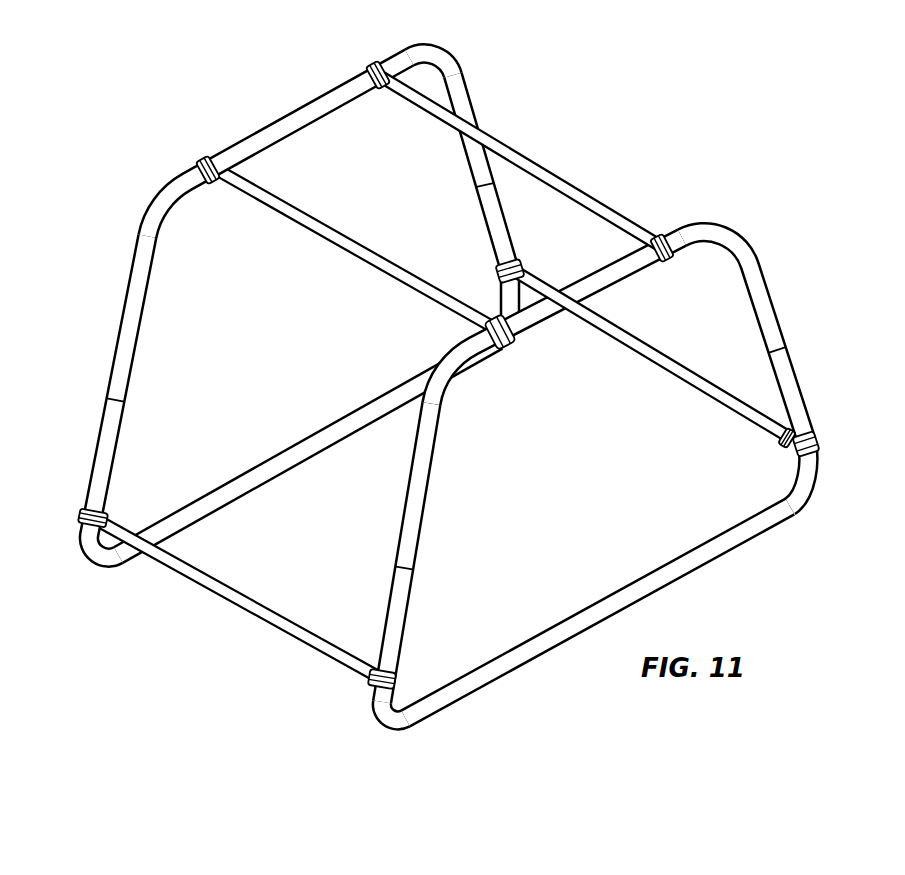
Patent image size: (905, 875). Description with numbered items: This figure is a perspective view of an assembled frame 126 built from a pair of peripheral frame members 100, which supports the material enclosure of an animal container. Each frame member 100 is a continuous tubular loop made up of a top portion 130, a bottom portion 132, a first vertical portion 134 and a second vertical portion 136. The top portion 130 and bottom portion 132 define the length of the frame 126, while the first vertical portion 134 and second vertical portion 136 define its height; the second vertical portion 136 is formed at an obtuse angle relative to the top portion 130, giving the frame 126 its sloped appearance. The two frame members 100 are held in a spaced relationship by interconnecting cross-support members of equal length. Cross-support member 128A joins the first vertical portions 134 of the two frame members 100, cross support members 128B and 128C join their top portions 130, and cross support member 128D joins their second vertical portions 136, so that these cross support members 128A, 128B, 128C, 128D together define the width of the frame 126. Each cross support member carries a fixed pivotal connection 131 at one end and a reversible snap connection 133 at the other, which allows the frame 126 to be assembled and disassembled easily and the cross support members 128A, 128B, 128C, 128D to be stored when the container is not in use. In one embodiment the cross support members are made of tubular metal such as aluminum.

The peripheral frame member 100 is at (468, 97).
The frame 126 is at (712, 192).
The cross-support member 128A is at (700, 377).
The cross support member 128B is at (593, 186).
The cross support member 128C is at (303, 208).
The cross support member 128D is at (186, 580).
The top portion 130 is at (404, 47).
The fixed pivotal connection 131 is at (209, 185).
The bottom portion 132 is at (462, 333).
The reversible snap connection 133 is at (498, 317).
The first vertical portion 134 is at (533, 250).
The second vertical portion 136 is at (72, 487).